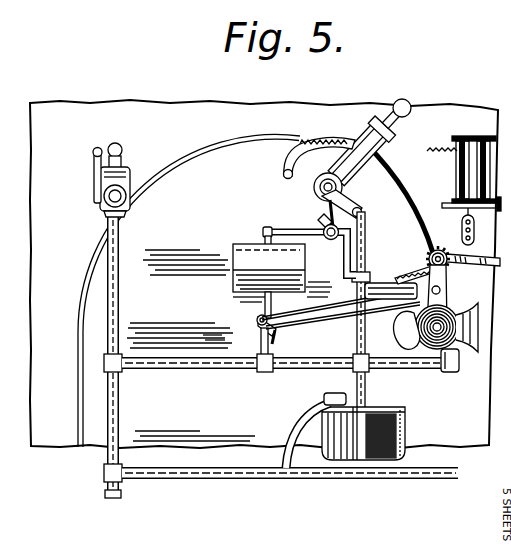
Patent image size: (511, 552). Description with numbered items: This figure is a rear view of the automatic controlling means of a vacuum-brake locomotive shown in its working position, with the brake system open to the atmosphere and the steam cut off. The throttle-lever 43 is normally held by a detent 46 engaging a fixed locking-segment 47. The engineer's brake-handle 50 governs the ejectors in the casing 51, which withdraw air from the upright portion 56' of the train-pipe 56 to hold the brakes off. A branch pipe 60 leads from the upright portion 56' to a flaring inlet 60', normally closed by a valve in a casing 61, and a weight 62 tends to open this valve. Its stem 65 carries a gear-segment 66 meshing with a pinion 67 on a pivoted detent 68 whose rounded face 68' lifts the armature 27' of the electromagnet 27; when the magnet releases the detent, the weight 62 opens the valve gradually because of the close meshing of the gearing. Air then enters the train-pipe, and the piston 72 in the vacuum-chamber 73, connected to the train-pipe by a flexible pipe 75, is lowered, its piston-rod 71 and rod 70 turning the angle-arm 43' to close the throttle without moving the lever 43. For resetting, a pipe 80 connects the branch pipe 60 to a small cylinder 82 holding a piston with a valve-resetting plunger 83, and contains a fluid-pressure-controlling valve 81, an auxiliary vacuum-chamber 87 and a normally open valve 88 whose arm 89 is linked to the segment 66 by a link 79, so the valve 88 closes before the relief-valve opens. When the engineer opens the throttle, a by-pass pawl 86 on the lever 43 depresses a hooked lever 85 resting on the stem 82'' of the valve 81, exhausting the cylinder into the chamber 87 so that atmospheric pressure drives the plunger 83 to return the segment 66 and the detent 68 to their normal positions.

The electromagnet 27 is at (459, 173).
The armature 27' is at (445, 220).
The throttle-lever 43 is at (366, 145).
The angle-arm 43' is at (392, 198).
The detent 46 is at (393, 112).
The locking-segment 47 is at (307, 147).
The manual brake-controller 50 is at (97, 216).
The casing 51 is at (128, 231).
The train-pipe 56 is at (290, 488).
The upright portion of the train-pipe 56' is at (133, 356).
The branch pipe 60 is at (282, 380).
The flaring inlet 60' is at (471, 342).
The valve casing 61 is at (443, 364).
The weight 62 is at (397, 338).
The valve-stem 65 is at (437, 327).
The gear-segment 66 is at (412, 274).
The pinion 67 is at (429, 257).
The pivoted detent 68 is at (454, 234).
The rounded face 68' is at (473, 281).
The rod 70 is at (343, 262).
The piston-rod 71 is at (367, 400).
The piston 72 is at (405, 450).
The vacuum-chamber 73 is at (343, 452).
The flexible pipe 75 is at (292, 424).
The link 79 is at (313, 320).
The pipe 80 is at (300, 236).
The fluid-pressure-controlling valve 81 is at (302, 248).
The cylinder 82 is at (337, 311).
The valve-stem 82'' is at (289, 215).
The valve-resetting plunger 83 is at (375, 313).
The hooked lever 85 is at (317, 217).
The by-pass actuator 86 is at (325, 221).
The auxiliary vacuum-chamber 87 is at (243, 243).
The normally open valve 88 is at (262, 336).
The arm 89 is at (257, 320).